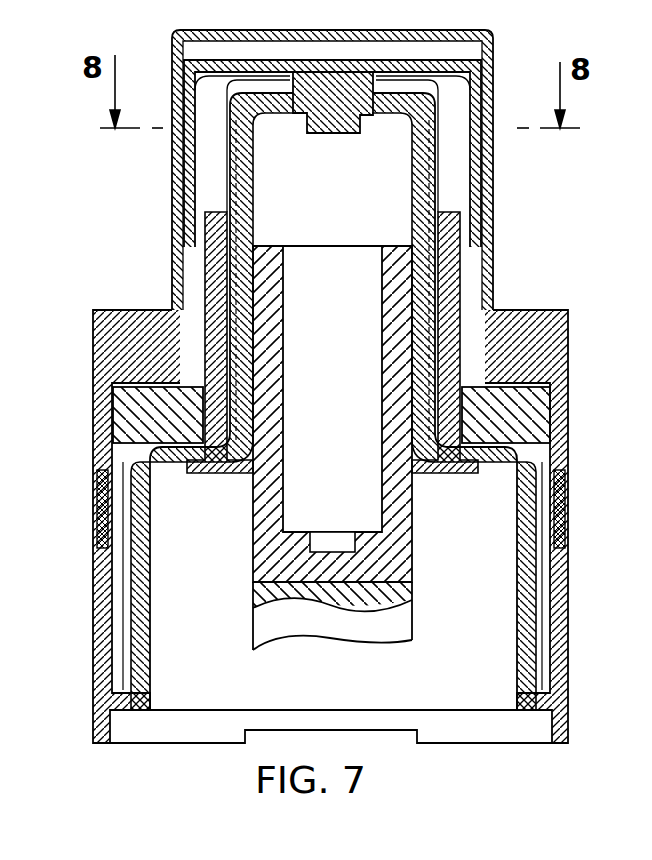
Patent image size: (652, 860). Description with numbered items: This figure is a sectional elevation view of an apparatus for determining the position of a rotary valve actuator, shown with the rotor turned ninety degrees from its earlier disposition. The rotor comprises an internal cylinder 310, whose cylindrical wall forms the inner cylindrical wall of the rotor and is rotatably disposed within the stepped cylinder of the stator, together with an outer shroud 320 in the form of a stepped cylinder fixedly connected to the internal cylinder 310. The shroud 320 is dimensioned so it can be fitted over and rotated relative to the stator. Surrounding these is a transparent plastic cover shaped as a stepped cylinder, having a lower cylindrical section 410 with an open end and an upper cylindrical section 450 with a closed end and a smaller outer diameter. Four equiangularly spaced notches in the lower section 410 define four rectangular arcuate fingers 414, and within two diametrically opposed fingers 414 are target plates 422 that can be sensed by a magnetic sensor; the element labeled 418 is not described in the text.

The internal cylinder 310 is at (428, 303).
The outer shroud 320 is at (184, 183).
The lower cylindrical section 410 is at (570, 362).
The rectangular arcuate fingers 414 is at (100, 435).
The housing flange 418 is at (130, 308).
The target plates 422 is at (100, 522).
The upper cylindrical section 450 is at (490, 207).